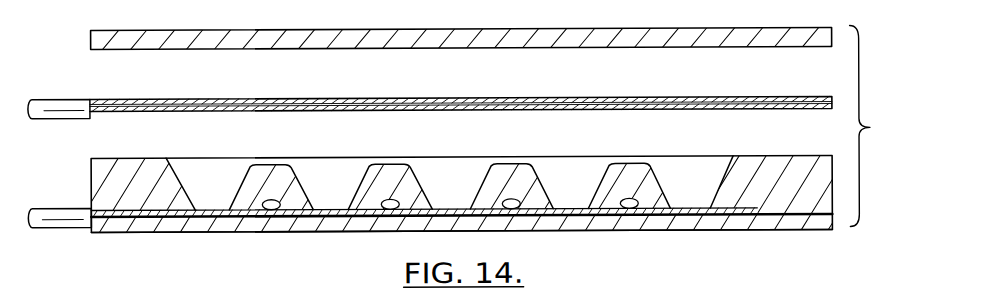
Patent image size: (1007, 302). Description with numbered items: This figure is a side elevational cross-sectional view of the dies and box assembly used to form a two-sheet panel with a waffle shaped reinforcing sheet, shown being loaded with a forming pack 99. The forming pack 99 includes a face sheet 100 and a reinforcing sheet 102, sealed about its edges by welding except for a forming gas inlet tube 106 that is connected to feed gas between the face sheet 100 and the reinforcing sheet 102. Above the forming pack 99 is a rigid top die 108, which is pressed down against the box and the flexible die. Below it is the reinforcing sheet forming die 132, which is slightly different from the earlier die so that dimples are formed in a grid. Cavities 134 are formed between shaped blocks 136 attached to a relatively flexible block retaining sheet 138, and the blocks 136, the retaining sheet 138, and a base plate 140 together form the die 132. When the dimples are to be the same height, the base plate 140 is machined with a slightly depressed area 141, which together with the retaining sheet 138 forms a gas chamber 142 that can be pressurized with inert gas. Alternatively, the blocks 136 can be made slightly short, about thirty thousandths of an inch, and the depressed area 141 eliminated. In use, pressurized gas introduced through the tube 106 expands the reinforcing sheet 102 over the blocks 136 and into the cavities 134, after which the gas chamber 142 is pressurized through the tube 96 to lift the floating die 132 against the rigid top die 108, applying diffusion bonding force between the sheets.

The tube 96 is at (64, 213).
The forming pack 99 is at (543, 91).
The face sheet 100 is at (672, 95).
The reinforcing sheet 102 is at (627, 112).
The forming gas inlet tube 106 is at (68, 104).
The rigid top die 108 is at (570, 28).
The reinforcing sheet forming die 132 is at (832, 193).
The cavities 134 is at (180, 180).
The shaped blocks 136 is at (402, 177).
The block retaining sheet 138 is at (718, 213).
The base plate 140 is at (767, 230).
The depressed area 141 is at (423, 208).
The gas chamber 142 is at (340, 230).